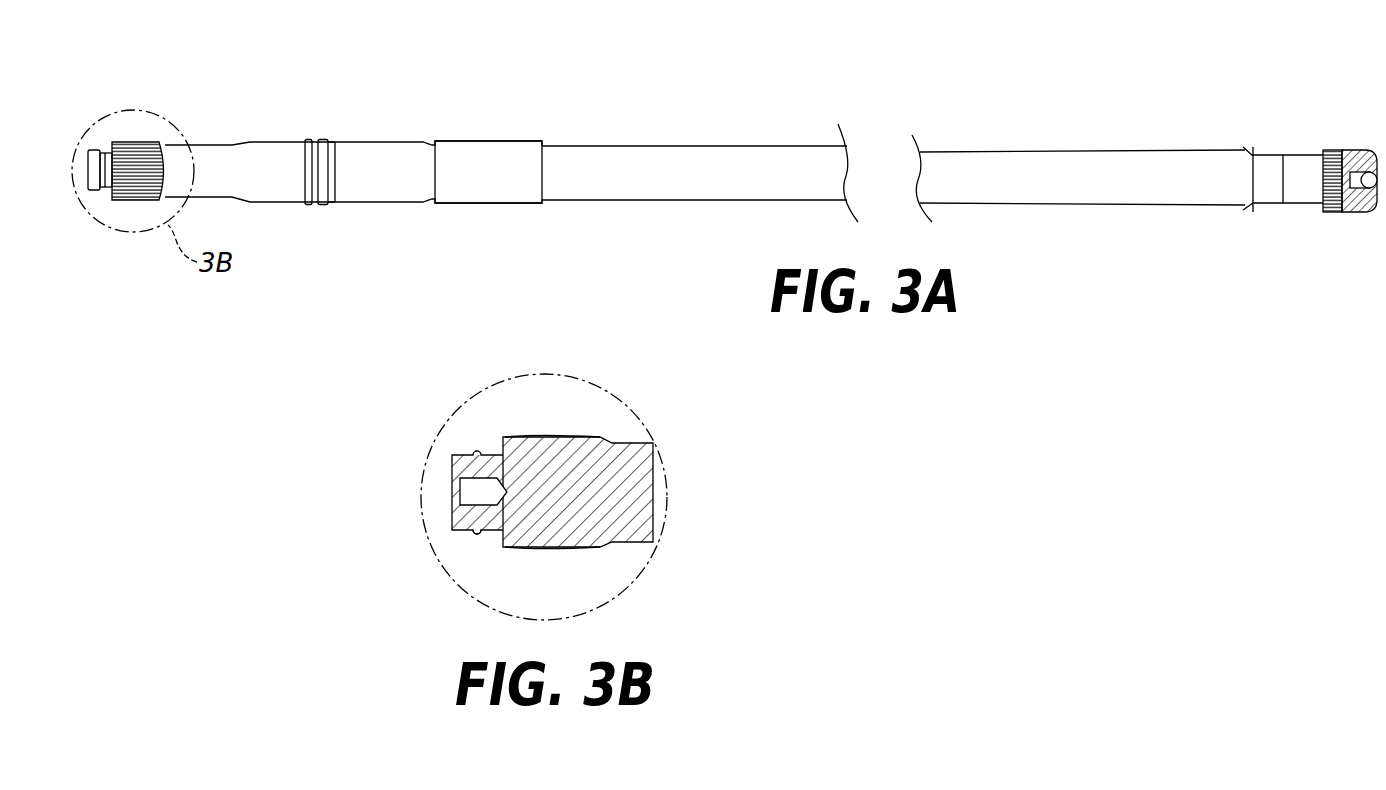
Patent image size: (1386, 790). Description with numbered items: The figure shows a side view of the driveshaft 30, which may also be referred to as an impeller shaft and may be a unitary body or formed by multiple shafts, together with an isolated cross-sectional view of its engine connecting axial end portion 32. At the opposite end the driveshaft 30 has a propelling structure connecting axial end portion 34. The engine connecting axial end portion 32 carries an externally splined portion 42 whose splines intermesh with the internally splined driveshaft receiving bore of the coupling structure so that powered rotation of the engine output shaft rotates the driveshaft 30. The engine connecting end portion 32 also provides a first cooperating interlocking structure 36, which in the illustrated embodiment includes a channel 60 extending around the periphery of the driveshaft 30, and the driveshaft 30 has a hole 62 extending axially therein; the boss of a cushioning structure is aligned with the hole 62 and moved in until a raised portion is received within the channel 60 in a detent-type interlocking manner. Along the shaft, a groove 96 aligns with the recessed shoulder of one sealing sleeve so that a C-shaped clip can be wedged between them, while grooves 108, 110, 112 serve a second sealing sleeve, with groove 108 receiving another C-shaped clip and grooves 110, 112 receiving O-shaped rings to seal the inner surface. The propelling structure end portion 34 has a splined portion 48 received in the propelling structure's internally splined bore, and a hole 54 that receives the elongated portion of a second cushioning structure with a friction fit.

In FIG. 3A, the driveshaft 30 is at (603, 162).
In FIG. 3A, the engine connecting axial end portion 32 is at (200, 107).
In FIG. 3B, the engine connecting axial end portion 32 is at (595, 407).
In FIG. 3A, the propelling structure connecting axial end portion 34 is at (1325, 133).
In FIG. 3A, the first cooperating interlocking structure 36 is at (95, 198).
In FIG. 3B, the first cooperating interlocking structure 36 is at (477, 450).
In FIG. 3A, the splined portion 42 is at (135, 153).
In FIG. 3B, the splined portion 42 is at (548, 547).
In FIG. 3A, the splined portion 48 is at (1333, 212).
In FIG. 3A, the hole 54 is at (1364, 150).
In FIG. 3A, the channel 60 is at (100, 172).
In FIG. 3B, the channel 60 is at (477, 532).
In FIG. 3A, the hole 62 is at (87, 165).
In FIG. 3B, the hole 62 is at (460, 492).
In FIG. 3A, the groove 96 is at (436, 141).
In FIG. 3A, the groove 108 is at (335, 140).
In FIG. 3A, the groove 110 is at (321, 139).
In FIG. 3A, the groove 112 is at (308, 139).